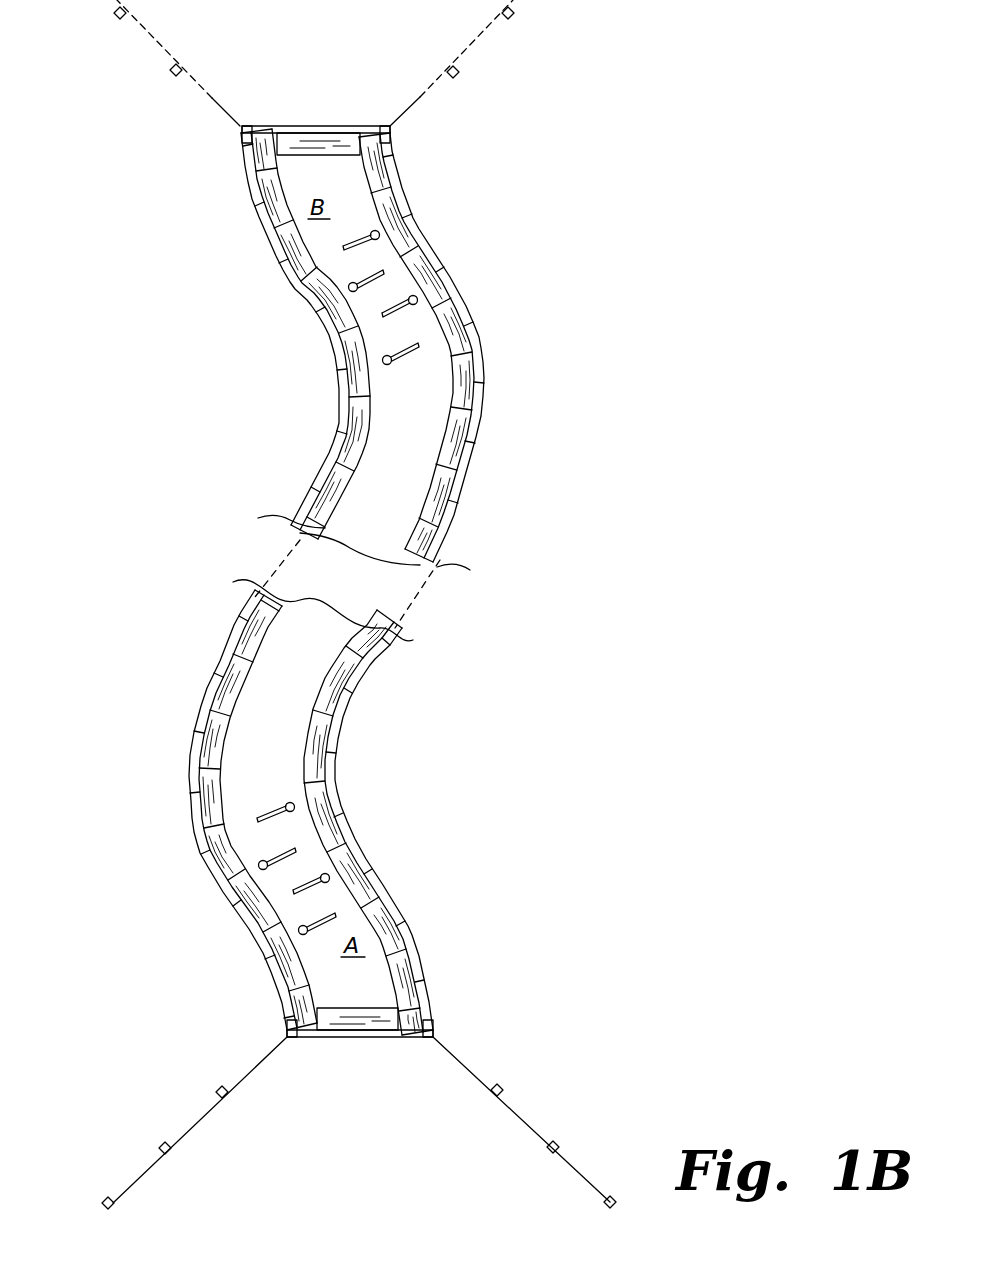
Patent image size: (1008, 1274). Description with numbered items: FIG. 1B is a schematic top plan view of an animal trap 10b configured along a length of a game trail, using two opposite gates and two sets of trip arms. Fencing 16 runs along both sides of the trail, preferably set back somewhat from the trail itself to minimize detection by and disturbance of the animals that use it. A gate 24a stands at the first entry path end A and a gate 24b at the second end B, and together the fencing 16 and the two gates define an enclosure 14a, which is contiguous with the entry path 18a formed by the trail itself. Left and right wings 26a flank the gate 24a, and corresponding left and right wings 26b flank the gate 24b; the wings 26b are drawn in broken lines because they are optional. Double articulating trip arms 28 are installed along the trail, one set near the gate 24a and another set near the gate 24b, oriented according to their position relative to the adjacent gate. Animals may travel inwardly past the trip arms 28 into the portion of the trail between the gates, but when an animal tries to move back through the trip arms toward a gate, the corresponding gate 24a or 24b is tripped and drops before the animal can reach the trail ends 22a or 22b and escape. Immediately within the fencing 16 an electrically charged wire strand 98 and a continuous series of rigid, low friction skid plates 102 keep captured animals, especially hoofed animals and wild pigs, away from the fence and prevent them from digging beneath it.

The trap 10b is at (724, 945).
The enclosure 14a is at (432, 478).
The entry path 18a is at (318, 711).
The fencing 16 is at (330, 437).
The end of game trail 22a is at (330, 987).
The end of game trail 22b is at (347, 178).
The gate 24a is at (357, 1037).
The gate 24b is at (318, 126).
The left and right wings 26a is at (190, 1130).
The left and right wings 26b is at (170, 60).
The double articulating trip arms 28 is at (410, 262).
The electrically charged wire strand 98 is at (403, 503).
The skid plates 102 is at (447, 390).